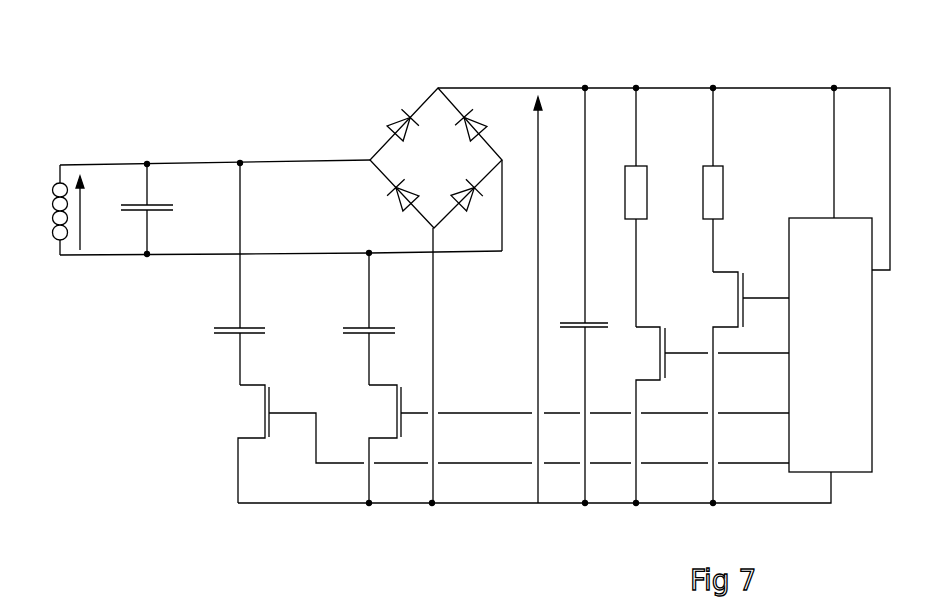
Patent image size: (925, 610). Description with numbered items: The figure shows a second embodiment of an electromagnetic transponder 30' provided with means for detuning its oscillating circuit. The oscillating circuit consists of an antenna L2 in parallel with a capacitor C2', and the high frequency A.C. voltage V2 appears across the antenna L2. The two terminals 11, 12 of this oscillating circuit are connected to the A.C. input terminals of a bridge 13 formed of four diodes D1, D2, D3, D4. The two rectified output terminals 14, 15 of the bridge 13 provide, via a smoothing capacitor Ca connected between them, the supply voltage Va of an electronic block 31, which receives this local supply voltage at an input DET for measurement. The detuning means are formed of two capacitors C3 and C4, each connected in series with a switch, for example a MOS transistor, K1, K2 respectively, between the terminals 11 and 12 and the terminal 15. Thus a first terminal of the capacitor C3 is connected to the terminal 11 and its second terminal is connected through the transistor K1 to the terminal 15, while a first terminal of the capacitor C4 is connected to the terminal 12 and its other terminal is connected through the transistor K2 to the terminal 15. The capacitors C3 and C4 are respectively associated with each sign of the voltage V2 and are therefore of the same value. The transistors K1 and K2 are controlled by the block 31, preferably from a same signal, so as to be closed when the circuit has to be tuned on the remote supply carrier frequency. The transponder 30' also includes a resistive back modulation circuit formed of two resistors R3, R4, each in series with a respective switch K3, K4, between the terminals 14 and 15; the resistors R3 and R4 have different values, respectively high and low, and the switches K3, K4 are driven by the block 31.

The terminal of the oscillating circuit 11 is at (147, 164).
The terminal of the oscillating circuit 12 is at (147, 254).
The bridge 13 is at (431, 169).
The rectified output terminal 14 is at (550, 88).
The rectified output terminal 15 is at (400, 503).
The transponder 30' is at (118, 489).
The electronic block 31 is at (812, 218).
The antenna L2 is at (45, 210).
The high frequency A.C. voltage V2 is at (94, 213).
The capacitor C2' is at (166, 209).
The diode D1 is at (388, 122).
The diode D2 is at (479, 121).
The diode D3 is at (391, 202).
The diode D4 is at (469, 208).
The supply voltage Va is at (548, 300).
The capacitor C3 is at (221, 274).
The capacitor C4 is at (349, 319).
The switch K1 is at (248, 413).
The switch K2 is at (394, 413).
The switch K3 is at (660, 355).
The switch K4 is at (731, 300).
The smoothing capacitor Ca is at (587, 295).
The resistor R3 is at (648, 207).
The resistor R4 is at (726, 180).